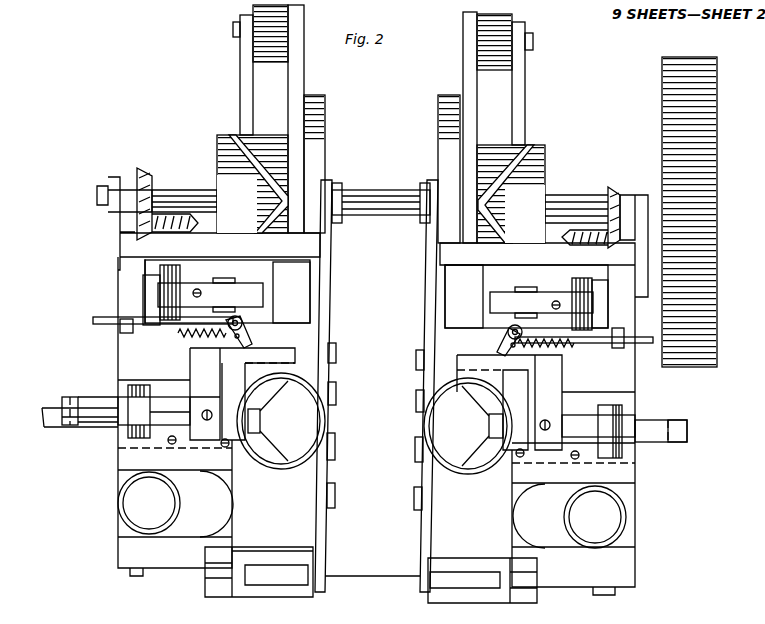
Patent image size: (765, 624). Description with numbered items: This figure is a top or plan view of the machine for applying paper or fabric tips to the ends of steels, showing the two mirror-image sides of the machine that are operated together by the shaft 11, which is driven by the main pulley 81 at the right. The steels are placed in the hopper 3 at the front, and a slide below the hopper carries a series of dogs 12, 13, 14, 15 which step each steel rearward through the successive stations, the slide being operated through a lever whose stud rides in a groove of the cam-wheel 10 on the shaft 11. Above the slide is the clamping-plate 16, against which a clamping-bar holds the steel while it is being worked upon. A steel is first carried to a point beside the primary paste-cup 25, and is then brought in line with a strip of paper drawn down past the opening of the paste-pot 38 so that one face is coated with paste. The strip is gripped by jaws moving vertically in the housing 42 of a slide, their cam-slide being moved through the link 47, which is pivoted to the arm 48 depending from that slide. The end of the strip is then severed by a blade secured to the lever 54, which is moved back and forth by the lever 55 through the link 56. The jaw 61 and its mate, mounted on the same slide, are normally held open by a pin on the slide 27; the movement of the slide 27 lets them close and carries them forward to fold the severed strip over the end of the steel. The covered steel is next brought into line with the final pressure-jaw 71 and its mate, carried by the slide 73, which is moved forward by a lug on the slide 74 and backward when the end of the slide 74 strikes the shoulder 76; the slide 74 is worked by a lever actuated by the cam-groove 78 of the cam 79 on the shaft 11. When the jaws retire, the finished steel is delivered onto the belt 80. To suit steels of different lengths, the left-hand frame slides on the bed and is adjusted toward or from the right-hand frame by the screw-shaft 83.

The hopper 3 is at (371, 575).
The cam-wheel 10 is at (313, 167).
The shaft 11 is at (375, 192).
The dog 12 is at (334, 493).
The dog 13 is at (334, 451).
The dog 14 is at (336, 394).
The dog 15 is at (336, 353).
The clamping-plate 16 is at (328, 315).
The primary paste-cup 25 is at (562, 512).
The slide 27 is at (160, 398).
The paste-pot 38 is at (374, 423).
The housing 42 is at (655, 453).
The link 47 is at (70, 397).
The arm 48 is at (90, 412).
The lever 54 is at (250, 343).
The lever 55 is at (105, 326).
The link 56 is at (128, 327).
The jaw 61 is at (369, 403).
The final pressure-jaw 71 is at (245, 290).
The slide 73 is at (118, 287).
The slide 74 is at (190, 283).
The shoulder 76 is at (147, 301).
The cam-groove 78 is at (246, 158).
The cam 79 is at (381, 209).
The belt 80 is at (302, 153).
The main pulley 81 is at (678, 117).
The screw-shaft 83 is at (57, 428).